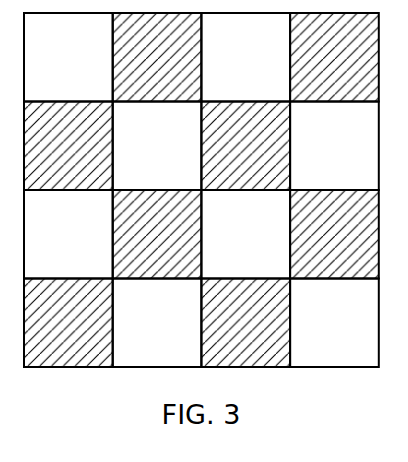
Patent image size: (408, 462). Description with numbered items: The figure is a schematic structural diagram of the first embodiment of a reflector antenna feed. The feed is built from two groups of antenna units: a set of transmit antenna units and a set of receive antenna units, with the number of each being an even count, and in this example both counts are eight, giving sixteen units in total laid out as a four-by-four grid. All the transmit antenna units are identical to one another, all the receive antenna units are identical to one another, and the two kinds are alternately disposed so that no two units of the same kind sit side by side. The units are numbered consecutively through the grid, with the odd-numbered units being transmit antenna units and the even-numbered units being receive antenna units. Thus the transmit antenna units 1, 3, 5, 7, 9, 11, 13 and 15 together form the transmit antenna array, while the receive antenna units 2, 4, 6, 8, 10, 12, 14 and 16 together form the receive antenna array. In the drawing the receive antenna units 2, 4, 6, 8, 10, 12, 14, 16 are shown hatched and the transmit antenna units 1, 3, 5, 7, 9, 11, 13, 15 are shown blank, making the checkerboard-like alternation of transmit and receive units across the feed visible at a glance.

The transmit antenna unit 1 is at (68, 57).
The receive antenna unit 2 is at (157, 57).
The transmit antenna unit 3 is at (245, 57).
The receive antenna unit 4 is at (334, 57).
The transmit antenna unit 5 is at (334, 146).
The receive antenna unit 6 is at (245, 146).
The transmit antenna unit 7 is at (157, 146).
The receive antenna unit 8 is at (68, 146).
The transmit antenna unit 9 is at (68, 234).
The receive antenna unit 10 is at (157, 234).
The transmit antenna unit 11 is at (245, 234).
The receive antenna unit 12 is at (334, 234).
The transmit antenna unit 13 is at (334, 323).
The receive antenna unit 14 is at (245, 323).
The transmit antenna unit 15 is at (157, 323).
The receive antenna unit 16 is at (68, 323).